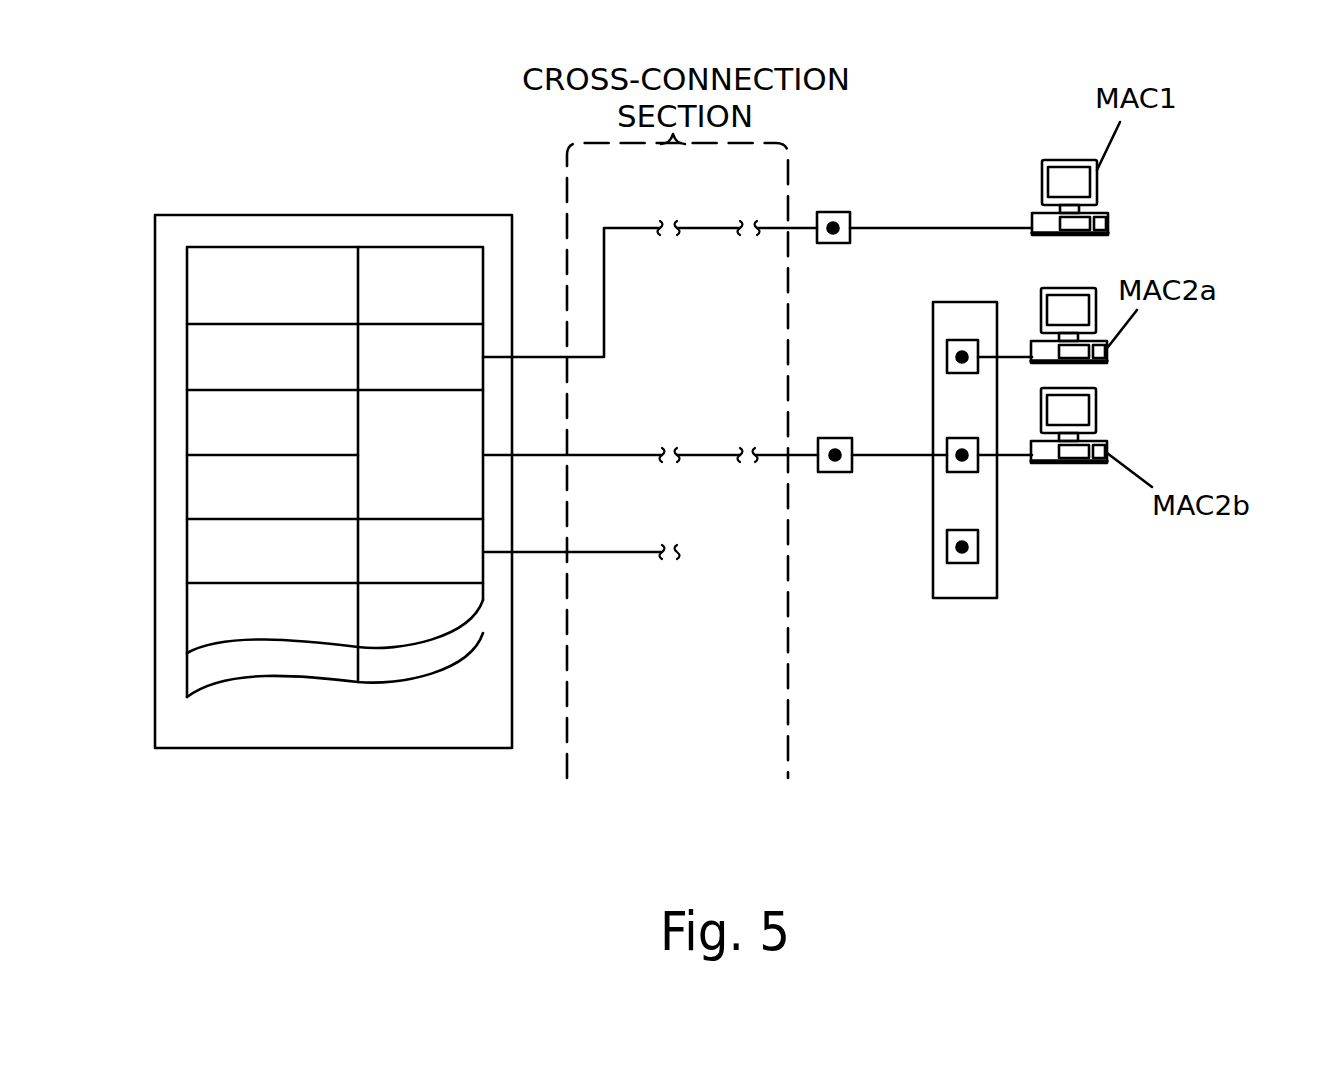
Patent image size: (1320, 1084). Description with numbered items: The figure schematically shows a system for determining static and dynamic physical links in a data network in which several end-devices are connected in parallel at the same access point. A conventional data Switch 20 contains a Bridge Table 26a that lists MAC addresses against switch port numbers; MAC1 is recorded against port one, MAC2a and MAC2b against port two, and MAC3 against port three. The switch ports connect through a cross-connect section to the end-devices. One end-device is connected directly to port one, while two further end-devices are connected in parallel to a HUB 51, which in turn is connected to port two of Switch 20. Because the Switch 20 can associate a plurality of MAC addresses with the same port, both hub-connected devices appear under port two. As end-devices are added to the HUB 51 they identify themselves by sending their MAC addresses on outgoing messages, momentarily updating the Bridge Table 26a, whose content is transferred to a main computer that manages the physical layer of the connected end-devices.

The Switch 20 is at (250, 212).
The Bridge Table 26a is at (337, 245).
The HUB 51 is at (947, 600).